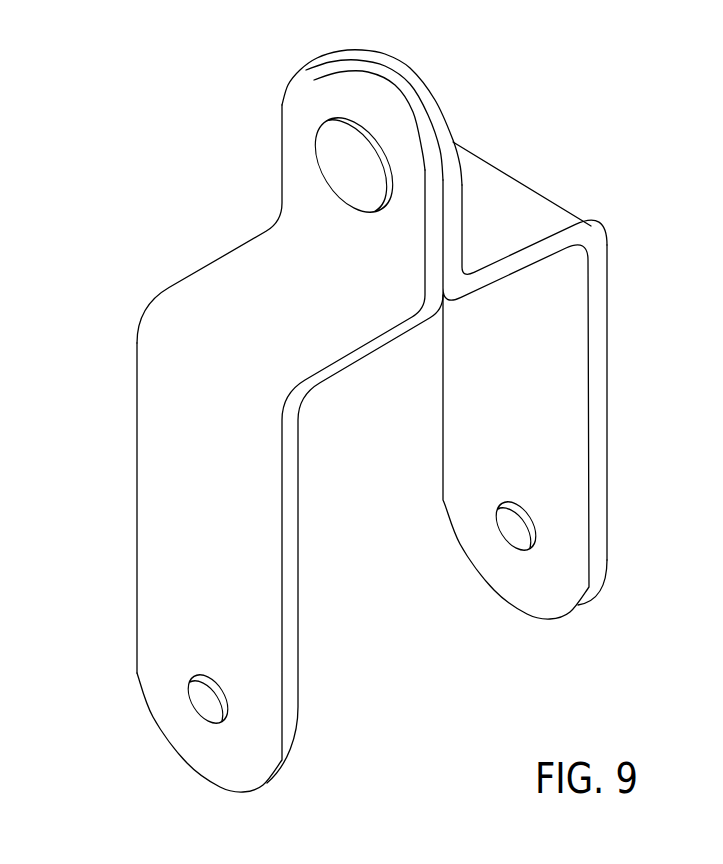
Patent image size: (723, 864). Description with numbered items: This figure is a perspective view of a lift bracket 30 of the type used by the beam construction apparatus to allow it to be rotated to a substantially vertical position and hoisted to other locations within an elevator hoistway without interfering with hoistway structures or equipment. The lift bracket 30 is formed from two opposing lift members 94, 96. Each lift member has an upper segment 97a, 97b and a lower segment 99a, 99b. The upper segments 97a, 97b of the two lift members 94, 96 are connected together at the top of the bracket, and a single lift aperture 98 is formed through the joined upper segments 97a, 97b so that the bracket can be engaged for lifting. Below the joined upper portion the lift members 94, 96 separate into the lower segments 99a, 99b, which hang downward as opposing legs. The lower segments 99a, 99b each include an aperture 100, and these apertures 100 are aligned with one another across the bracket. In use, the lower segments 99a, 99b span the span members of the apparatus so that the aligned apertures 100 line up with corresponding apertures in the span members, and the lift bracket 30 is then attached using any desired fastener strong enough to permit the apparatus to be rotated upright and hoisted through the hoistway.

The lift bracket 30 is at (607, 85).
The lift member 94 is at (137, 502).
The lift member 96 is at (608, 395).
The upper segment 97a is at (284, 96).
The upper segment 97b is at (409, 67).
The lift aperture 98 is at (330, 172).
The lower segment 99a is at (137, 607).
The lower segment 99b is at (608, 480).
The aligned apertures 100 is at (203, 702).